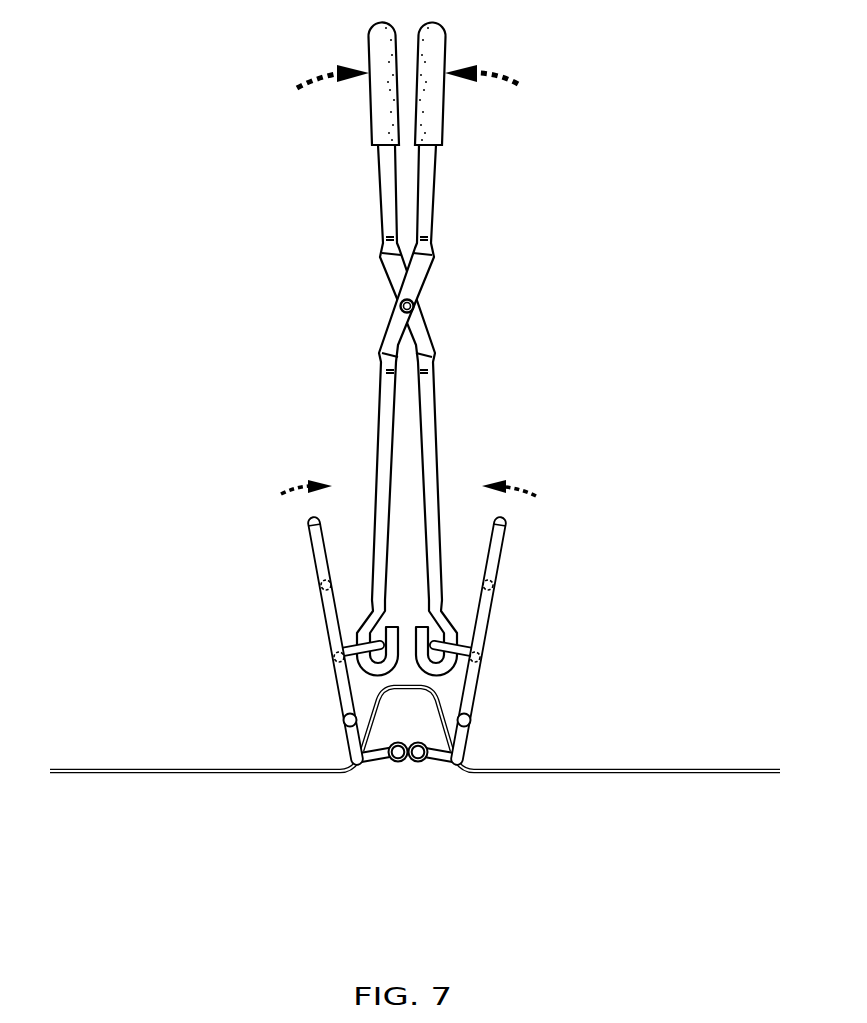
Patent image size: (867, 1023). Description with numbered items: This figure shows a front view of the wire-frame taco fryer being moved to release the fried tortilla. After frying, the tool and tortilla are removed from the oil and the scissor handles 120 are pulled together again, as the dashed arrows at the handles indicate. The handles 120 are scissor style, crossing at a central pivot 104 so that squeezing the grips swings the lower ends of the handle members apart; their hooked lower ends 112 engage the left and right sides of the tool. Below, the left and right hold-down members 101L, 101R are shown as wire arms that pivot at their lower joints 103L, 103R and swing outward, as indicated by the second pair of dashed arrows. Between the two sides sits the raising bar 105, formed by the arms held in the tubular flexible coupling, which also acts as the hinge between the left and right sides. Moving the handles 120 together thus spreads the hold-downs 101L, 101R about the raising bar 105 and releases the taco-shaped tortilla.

The scissor handles 120 is at (370, 117).
The pivot 104 is at (413, 303).
The tong arms with hooks 112 is at (447, 617).
The left support arm 101L is at (314, 562).
The right support arm 101R is at (502, 567).
The left arm pivot 103L is at (344, 718).
The right arm pivot 103R is at (470, 718).
The raising bar 105 is at (408, 774).